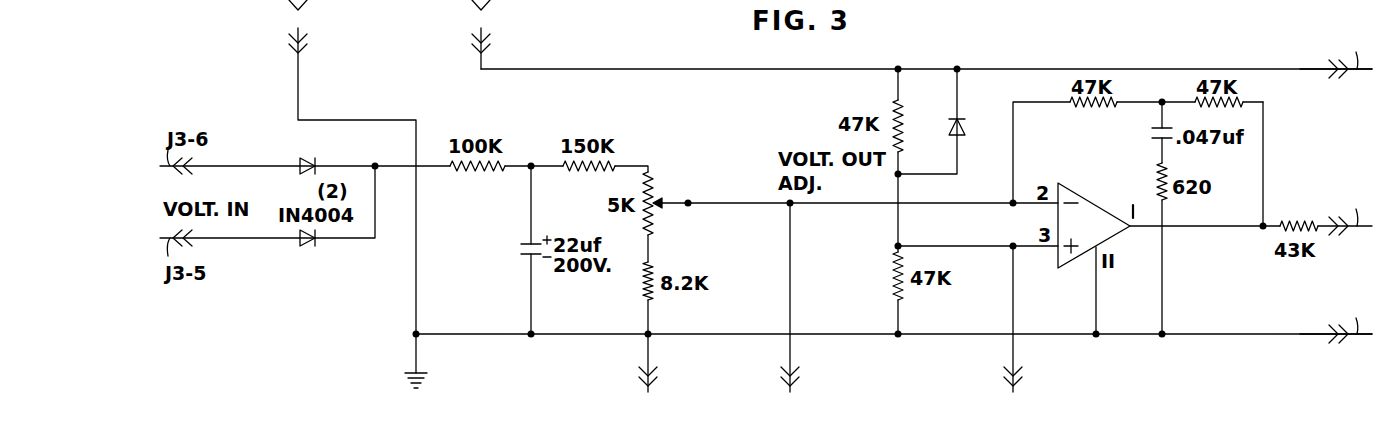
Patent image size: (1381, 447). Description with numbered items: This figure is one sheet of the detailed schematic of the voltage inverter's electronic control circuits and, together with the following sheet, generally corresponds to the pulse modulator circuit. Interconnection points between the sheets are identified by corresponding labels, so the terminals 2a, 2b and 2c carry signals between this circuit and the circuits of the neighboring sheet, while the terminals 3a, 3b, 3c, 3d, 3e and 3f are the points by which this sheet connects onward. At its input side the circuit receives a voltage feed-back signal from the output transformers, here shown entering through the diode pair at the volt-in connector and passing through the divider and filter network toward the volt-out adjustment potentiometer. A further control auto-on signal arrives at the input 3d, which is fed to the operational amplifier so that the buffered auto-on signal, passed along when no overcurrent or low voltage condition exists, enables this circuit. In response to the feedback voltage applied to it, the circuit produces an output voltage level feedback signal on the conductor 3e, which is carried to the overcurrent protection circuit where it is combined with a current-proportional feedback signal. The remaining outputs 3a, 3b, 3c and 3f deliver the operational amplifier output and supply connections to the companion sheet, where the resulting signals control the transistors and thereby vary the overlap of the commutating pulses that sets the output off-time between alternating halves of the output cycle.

The interconnection point 2a is at (303, 32).
The interconnection point 2b is at (486, 32).
The interconnection point 2c is at (1352, 4).
The output 3a is at (1336, 53).
The output 3b is at (1326, 208).
The output 3c is at (1336, 318).
The auto-on signal input 3d is at (1018, 384).
The output voltage level feedback conductor 3e is at (795, 384).
The output 3f is at (653, 384).